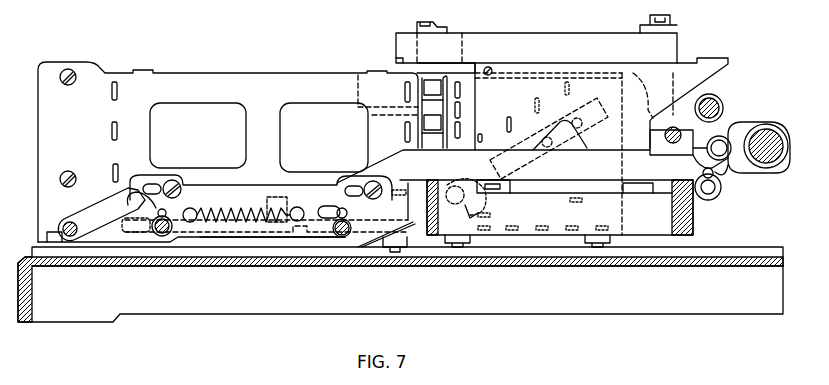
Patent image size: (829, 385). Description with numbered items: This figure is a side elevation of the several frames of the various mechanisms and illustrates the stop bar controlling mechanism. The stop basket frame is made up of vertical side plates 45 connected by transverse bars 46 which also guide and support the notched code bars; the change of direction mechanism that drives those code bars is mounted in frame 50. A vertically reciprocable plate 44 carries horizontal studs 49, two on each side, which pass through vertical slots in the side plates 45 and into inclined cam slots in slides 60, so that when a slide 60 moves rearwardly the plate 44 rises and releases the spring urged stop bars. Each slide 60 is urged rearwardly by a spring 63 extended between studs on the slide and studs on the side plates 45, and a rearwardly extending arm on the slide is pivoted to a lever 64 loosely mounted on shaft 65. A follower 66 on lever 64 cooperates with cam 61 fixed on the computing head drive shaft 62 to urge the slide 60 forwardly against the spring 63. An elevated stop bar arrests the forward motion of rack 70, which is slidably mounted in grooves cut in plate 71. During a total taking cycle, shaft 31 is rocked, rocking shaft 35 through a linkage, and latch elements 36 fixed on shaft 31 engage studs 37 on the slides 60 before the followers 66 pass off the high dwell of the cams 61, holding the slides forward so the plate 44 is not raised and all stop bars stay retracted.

The shaft 31 is at (63, 229).
The shaft 35 is at (665, 133).
The latch element 36 is at (97, 213).
The stud 37 is at (132, 222).
The vertically reciprocable plate 44 is at (232, 238).
The side plate 45 is at (47, 128).
The transverse bar 46 is at (112, 92).
The horizontal stud 49 is at (163, 237).
The frame 50 is at (620, 215).
The slide 60 is at (713, 200).
The cam 61 is at (741, 163).
The computing head drive shaft 62 is at (770, 150).
The spring 63 is at (238, 216).
The lever 64 is at (722, 133).
The shaft 65 is at (711, 108).
The follower 66 is at (700, 158).
The rack 70 is at (401, 43).
The plate 71 is at (672, 74).